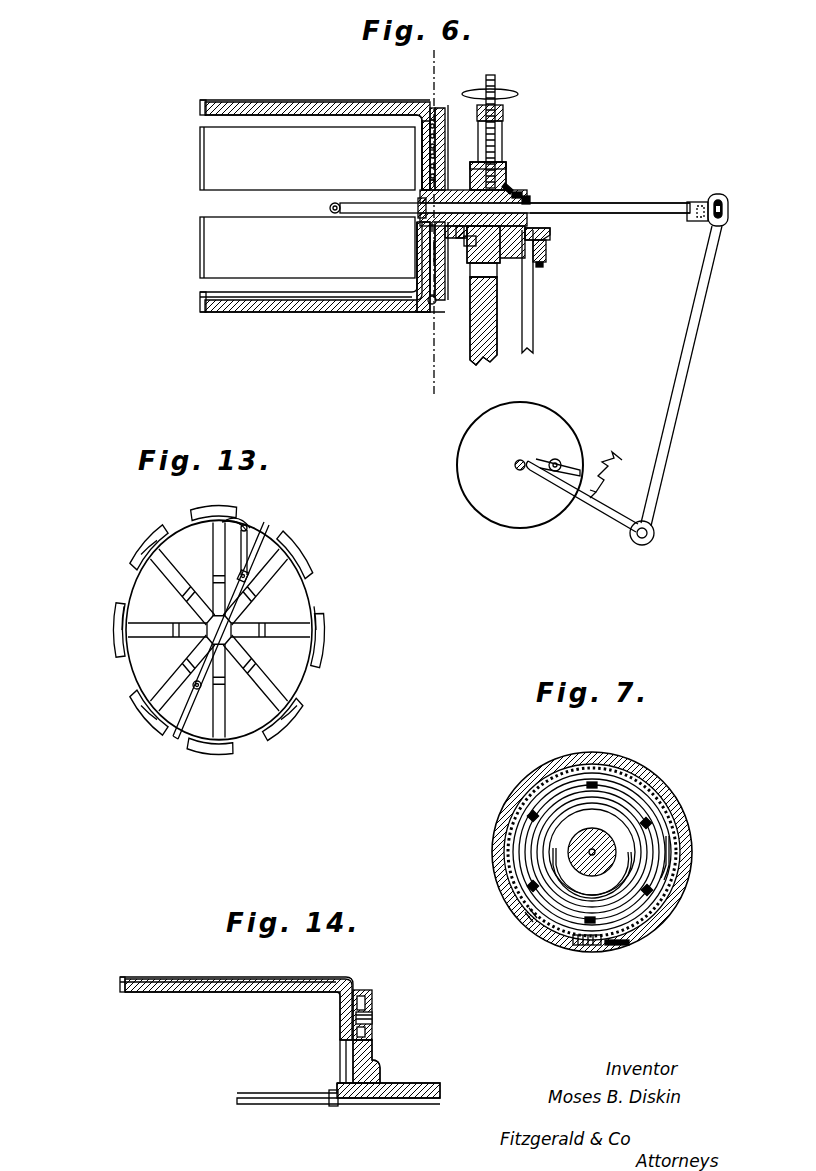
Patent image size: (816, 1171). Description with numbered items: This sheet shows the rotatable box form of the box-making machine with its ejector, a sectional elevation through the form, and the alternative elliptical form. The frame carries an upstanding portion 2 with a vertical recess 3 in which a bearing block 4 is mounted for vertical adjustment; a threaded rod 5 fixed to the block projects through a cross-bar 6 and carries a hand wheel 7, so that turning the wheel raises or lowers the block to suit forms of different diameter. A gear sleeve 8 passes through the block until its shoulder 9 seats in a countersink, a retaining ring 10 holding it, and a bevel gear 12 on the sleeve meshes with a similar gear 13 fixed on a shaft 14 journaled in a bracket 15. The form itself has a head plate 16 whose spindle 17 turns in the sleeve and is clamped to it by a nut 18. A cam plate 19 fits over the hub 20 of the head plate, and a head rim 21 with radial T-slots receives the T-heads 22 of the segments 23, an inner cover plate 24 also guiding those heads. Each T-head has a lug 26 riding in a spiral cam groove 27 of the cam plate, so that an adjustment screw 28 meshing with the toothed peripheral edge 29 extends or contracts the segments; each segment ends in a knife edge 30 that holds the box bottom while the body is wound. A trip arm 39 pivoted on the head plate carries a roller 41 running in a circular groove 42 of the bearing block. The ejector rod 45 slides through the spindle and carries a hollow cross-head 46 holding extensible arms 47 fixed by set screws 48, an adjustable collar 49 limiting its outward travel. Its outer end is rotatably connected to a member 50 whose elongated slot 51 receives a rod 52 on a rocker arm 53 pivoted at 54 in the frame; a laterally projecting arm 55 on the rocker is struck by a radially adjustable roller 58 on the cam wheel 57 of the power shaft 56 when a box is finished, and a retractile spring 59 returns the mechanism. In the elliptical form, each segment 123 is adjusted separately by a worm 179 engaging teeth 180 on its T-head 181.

In FIG. 6, the upstanding portion 2 is at (483, 325).
In FIG. 6, the vertical recess 3 is at (504, 138).
In FIG. 6, the bearing block 4 is at (506, 160).
In FIG. 6, the threaded rod 5 is at (493, 74).
In FIG. 6, the cross-bar 6 is at (505, 111).
In FIG. 6, the hand wheel 7 is at (443, 224).
In FIG. 6, the gear sleeve 8 is at (464, 190).
In FIG. 6, the shoulder 9 is at (512, 182).
In FIG. 6, the retaining ring 10 is at (430, 160).
In FIG. 6, the bevel gear 12 is at (512, 192).
In FIG. 6, the bevel gear 13 is at (552, 238).
In FIG. 6, the shaft 14 is at (536, 284).
In FIG. 13, the shaft 14 is at (220, 512).
In FIG. 6, the bracket 15 is at (548, 254).
In FIG. 6, the head plate 16 is at (447, 108).
In FIG. 6, the spindle 17 is at (530, 205).
In FIG. 6, the nut 18 is at (525, 200).
In FIG. 6, the cam plate 19 is at (434, 252).
In FIG. 7, the cam plate 19 is at (640, 787).
In FIG. 6, the hub 20 is at (430, 178).
In FIG. 7, the hub 20 is at (569, 852).
In FIG. 6, the head rim 21 is at (426, 108).
In FIG. 7, the head rim 21 is at (535, 770).
In FIG. 6, the T-heads 22 is at (428, 130).
In FIG. 6, the segments 23 is at (282, 100).
In FIG. 13, the segments 23 is at (207, 633).
In FIG. 6, the inner cover plate 24 is at (430, 237).
In FIG. 13, the inner cover plate 24 is at (239, 629).
In FIG. 6, the lug 26 is at (430, 146).
In FIG. 7, the lug 26 is at (593, 785).
In FIG. 7, the spiral cam groove 27 is at (531, 922).
In FIG. 7, the adjustment screw 28 is at (618, 946).
In FIG. 7, the toothed peripheral edge 29 is at (690, 862).
In FIG. 6, the knife edge 30 is at (200, 101).
In FIG. 13, the knife edge 30 is at (210, 641).
In FIG. 14, the knife edge 30 is at (120, 985).
In FIG. 6, the trip arm 39 is at (466, 238).
In FIG. 6, the roller 41 is at (470, 250).
In FIG. 6, the circular groove 42 is at (502, 260).
In FIG. 6, the ejector rod 45 is at (612, 200).
In FIG. 6, the cross-head 46 is at (328, 208).
In FIG. 13, the cross-head 46 is at (246, 600).
In FIG. 13, the extensible arms 47 is at (265, 527).
In FIG. 13, the set screws 48 is at (204, 688).
In FIG. 6, the adjustable collar 49 is at (420, 216).
In FIG. 6, the member 50 is at (712, 196).
In FIG. 6, the elongated slot 51 is at (725, 205).
In FIG. 6, the rod 52 is at (726, 213).
In FIG. 6, the rocker arm 53 is at (710, 287).
In FIG. 6, the pivot 54 is at (658, 534).
In FIG. 6, the laterally projecting arm 55 is at (608, 524).
In FIG. 6, the power shaft 56 is at (515, 465).
In FIG. 6, the cam wheel 57 is at (462, 498).
In FIG. 6, the radially adjustable roller 58 is at (560, 460).
In FIG. 6, the retractile spring 59 is at (620, 462).
In FIG. 14, the bar 123 is at (200, 978).
In FIG. 14, the worm 179 is at (376, 1017).
In FIG. 14, the teeth 180 is at (360, 990).
In FIG. 14, the T-head 181 is at (342, 1019).